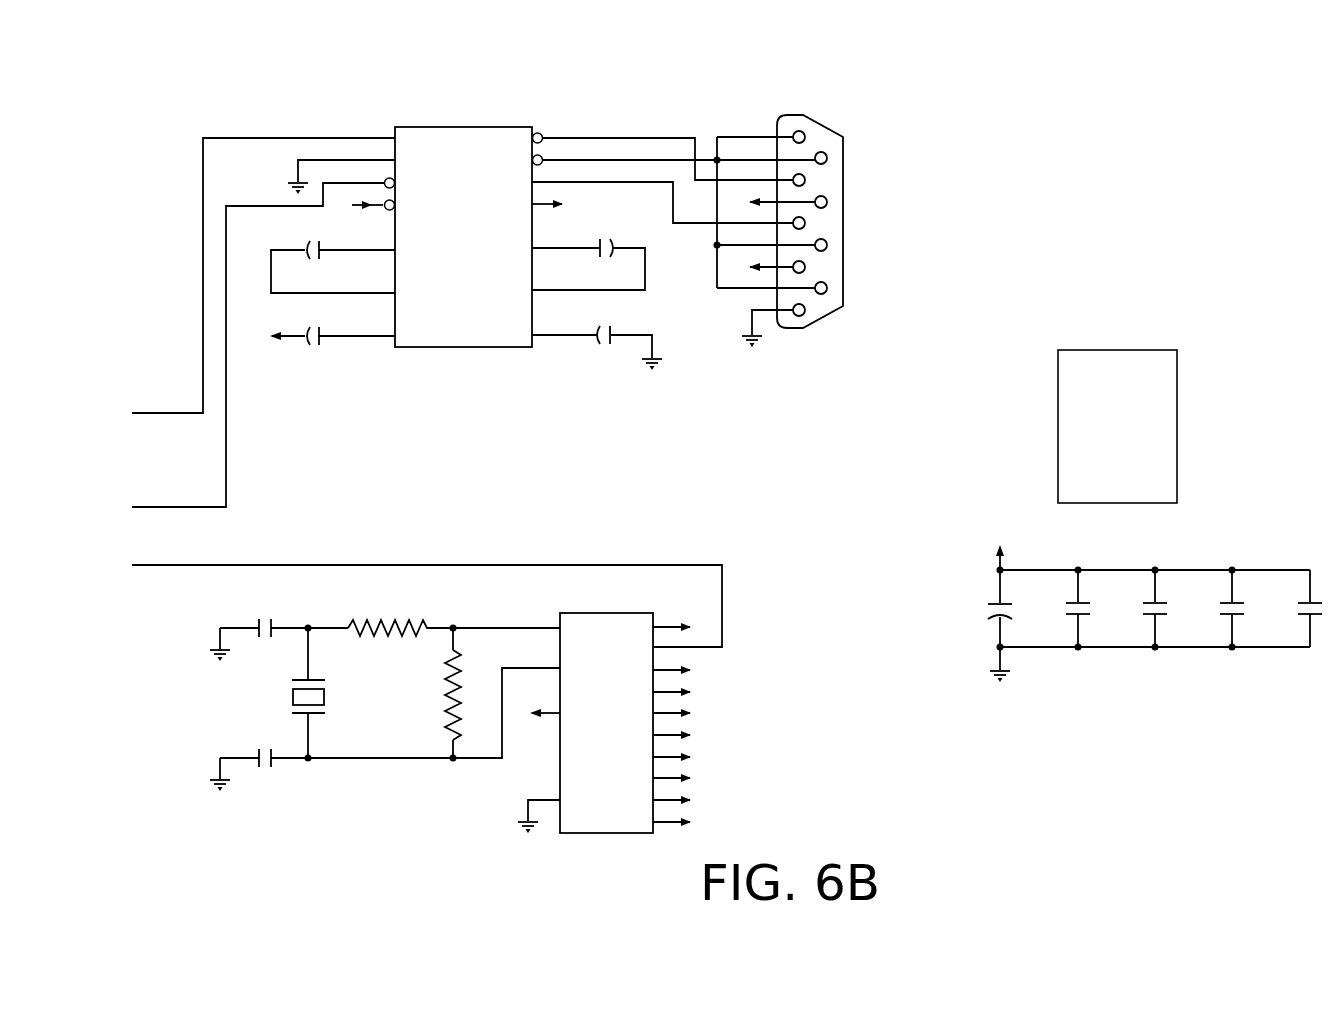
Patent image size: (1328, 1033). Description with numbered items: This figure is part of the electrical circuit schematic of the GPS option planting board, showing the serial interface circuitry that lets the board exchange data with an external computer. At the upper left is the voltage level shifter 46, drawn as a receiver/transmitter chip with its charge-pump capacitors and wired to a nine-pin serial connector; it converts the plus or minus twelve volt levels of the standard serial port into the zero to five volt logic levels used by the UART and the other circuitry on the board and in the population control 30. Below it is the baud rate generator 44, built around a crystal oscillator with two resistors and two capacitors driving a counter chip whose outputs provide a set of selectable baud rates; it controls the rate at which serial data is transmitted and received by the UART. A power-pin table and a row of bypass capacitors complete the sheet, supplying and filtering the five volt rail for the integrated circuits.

The population control 30 is at (1172, 147).
The baud rate generator 44 is at (350, 601).
The RS-232 voltage level shifter 46 is at (448, 358).